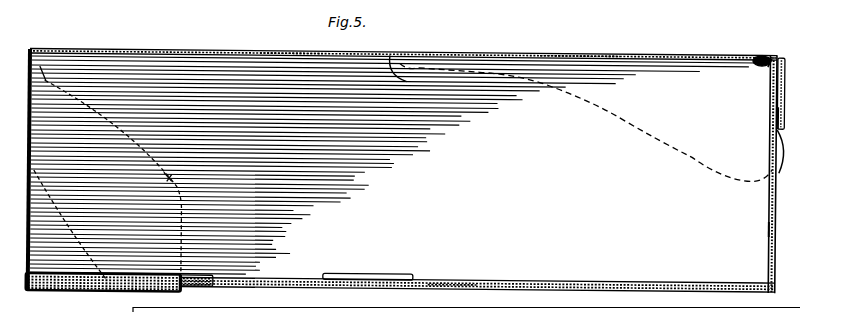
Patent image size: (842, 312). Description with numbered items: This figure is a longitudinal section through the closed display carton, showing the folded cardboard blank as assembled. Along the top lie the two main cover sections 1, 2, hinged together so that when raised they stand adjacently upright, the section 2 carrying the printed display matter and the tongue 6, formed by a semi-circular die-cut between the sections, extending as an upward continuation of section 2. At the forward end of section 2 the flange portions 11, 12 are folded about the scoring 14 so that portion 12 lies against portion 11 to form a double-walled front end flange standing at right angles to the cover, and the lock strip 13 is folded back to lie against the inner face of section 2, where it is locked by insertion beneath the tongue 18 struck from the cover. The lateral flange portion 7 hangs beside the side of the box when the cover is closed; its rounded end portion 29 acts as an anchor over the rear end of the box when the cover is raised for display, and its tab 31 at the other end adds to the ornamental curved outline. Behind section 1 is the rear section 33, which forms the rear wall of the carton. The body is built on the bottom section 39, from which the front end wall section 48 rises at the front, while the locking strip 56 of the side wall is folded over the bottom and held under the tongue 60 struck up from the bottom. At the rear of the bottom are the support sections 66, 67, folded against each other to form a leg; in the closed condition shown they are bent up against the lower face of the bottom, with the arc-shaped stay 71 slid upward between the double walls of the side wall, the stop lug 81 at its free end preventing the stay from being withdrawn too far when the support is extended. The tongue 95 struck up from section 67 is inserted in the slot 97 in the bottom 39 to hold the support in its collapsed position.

The cover section 1 is at (134, 50).
The cover section 2 is at (573, 46).
The tongue 6 is at (290, 50).
The flange portion 7 is at (632, 114).
The flange portion 11 is at (784, 108).
The flange portion 12 is at (781, 80).
The lock strip 13 is at (770, 65).
The scoring 14 is at (778, 49).
The tongue 18 is at (755, 60).
The rounded end portion 29 is at (781, 163).
The tab 31 is at (410, 77).
The rear section 33 is at (35, 148).
The bottom section 39 is at (527, 275).
The front end wall section 48 is at (771, 221).
The locking strip 56 is at (457, 276).
The tongue 60 is at (380, 271).
The support section 66 is at (66, 285).
The support section 67 is at (107, 280).
The stay 71 is at (167, 176).
The stop lug 81 is at (60, 49).
The tongue 95 is at (203, 275).
The slot 97 is at (180, 276).